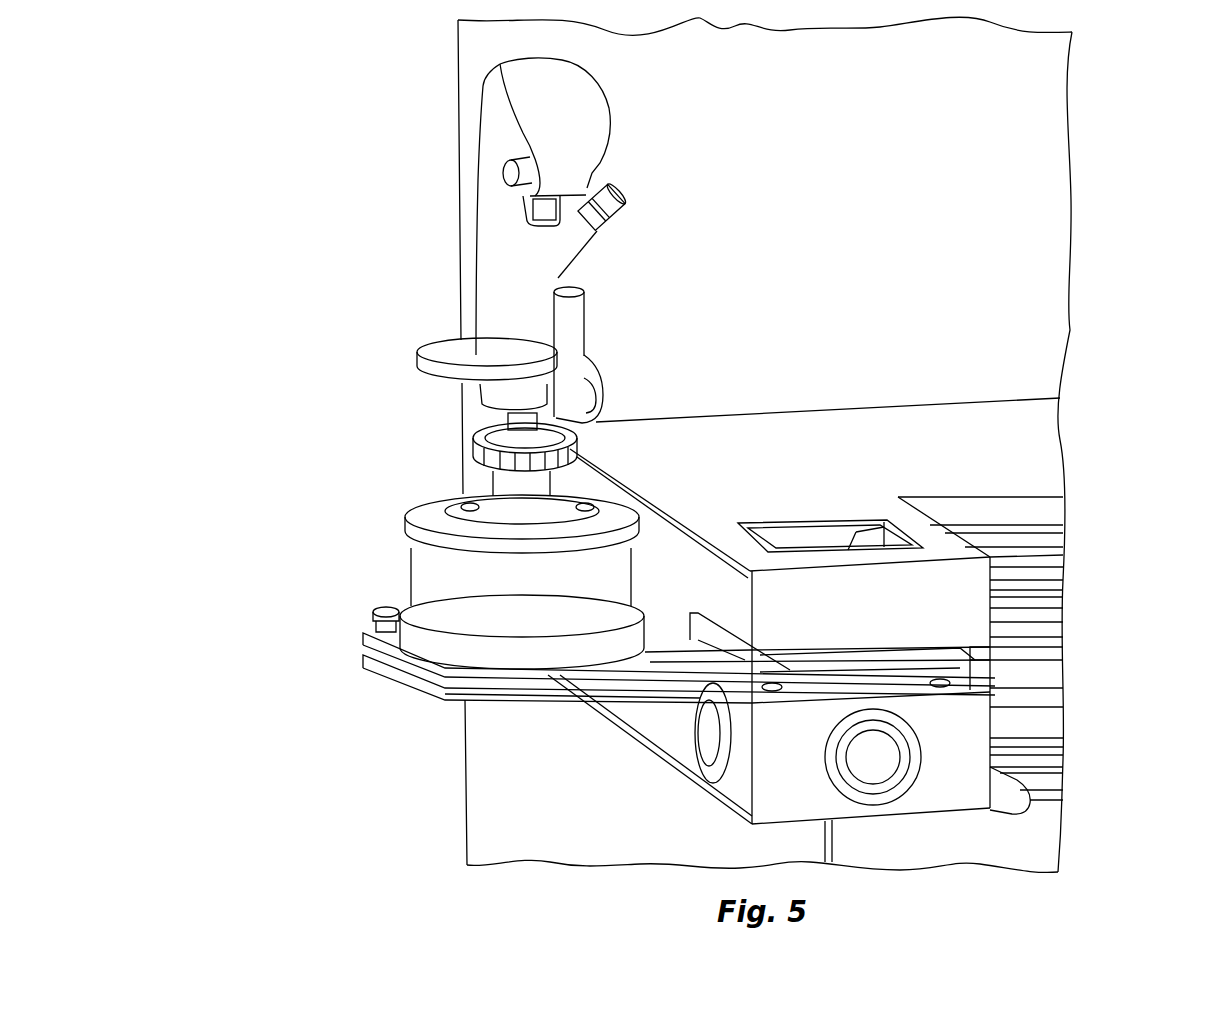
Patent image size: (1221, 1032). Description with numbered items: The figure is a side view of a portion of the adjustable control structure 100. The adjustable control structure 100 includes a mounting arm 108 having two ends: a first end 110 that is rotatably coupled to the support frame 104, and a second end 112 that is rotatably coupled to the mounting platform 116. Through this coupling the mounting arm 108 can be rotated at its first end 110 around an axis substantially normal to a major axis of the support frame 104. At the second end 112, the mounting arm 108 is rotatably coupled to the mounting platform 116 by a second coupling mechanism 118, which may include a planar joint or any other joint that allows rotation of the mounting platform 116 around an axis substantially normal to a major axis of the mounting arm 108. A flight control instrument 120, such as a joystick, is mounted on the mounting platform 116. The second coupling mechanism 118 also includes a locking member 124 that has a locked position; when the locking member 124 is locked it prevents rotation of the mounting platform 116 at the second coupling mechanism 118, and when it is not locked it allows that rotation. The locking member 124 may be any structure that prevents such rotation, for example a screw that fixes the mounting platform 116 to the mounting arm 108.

The adjustable control structure 100 is at (1098, 56).
The support frame 104 is at (850, 447).
The mounting arm 108 is at (693, 668).
The first end 110 is at (957, 672).
The second end 112 is at (390, 673).
The mounting platform 116 is at (395, 647).
The second coupling mechanism 118 is at (448, 680).
The flight control instrument 120 is at (505, 242).
The locking member 124 is at (380, 612).